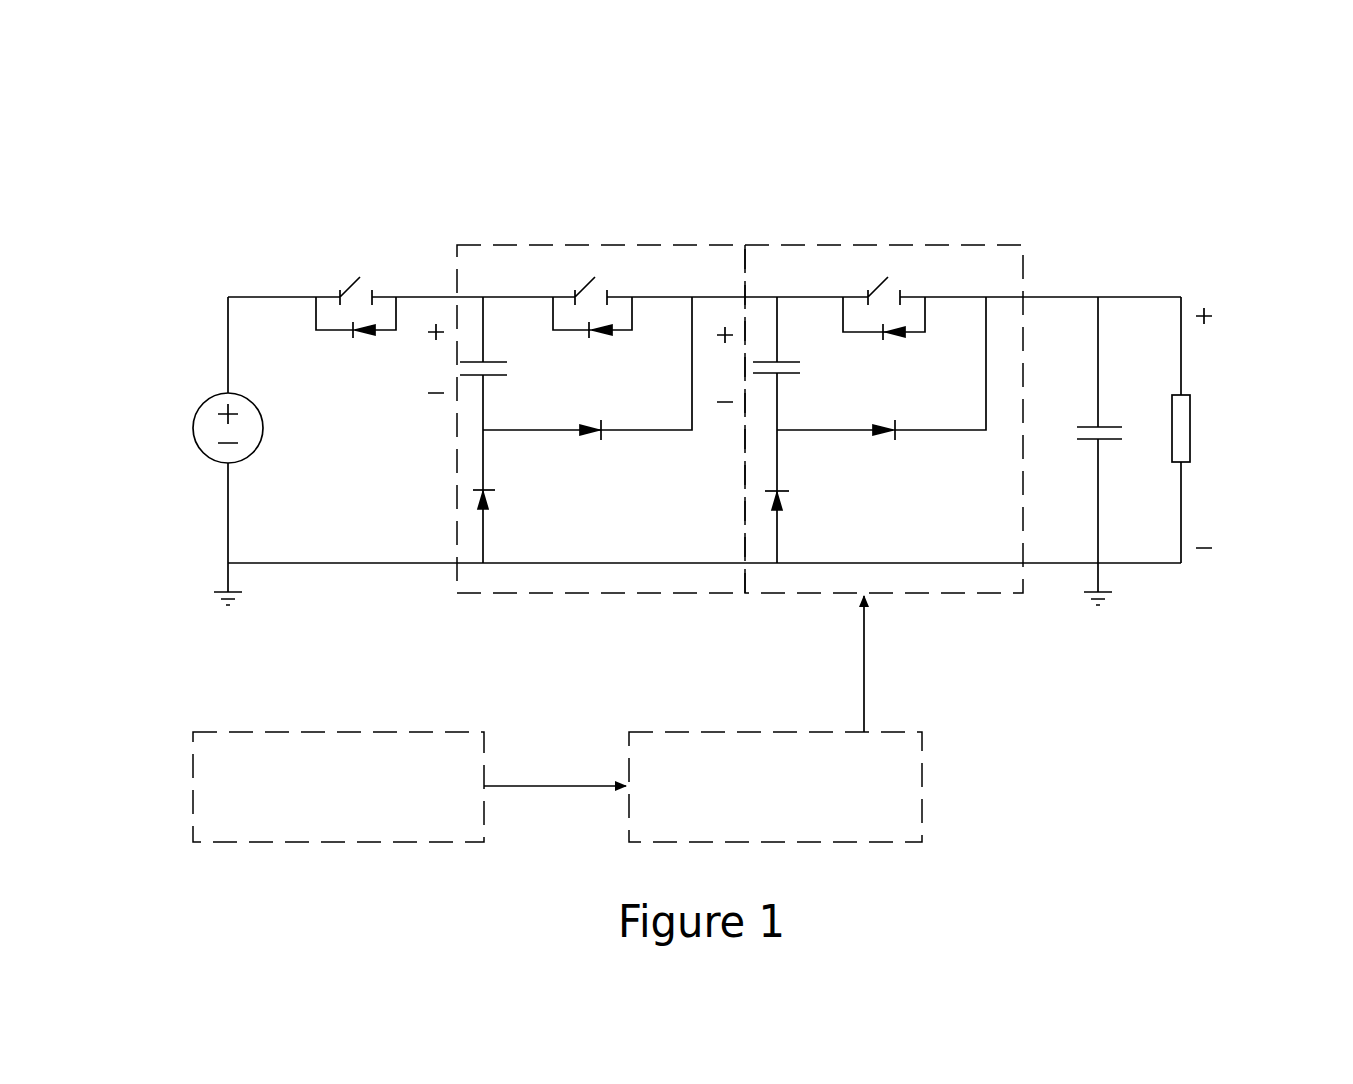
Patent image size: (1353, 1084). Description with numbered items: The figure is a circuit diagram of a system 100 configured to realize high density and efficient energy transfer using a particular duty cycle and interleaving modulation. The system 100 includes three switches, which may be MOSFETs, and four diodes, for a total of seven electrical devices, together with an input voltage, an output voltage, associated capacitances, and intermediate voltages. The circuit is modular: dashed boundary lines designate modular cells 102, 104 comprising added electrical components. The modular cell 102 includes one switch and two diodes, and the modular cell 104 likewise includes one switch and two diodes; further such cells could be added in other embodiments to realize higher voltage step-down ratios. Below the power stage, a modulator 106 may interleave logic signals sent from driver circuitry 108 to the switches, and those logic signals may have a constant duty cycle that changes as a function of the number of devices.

The system 100 is at (1067, 101).
The modular cell 102 is at (688, 245).
The modular cell 104 is at (935, 245).
The modulator 106 is at (486, 757).
The driver circuitry 108 is at (925, 757).